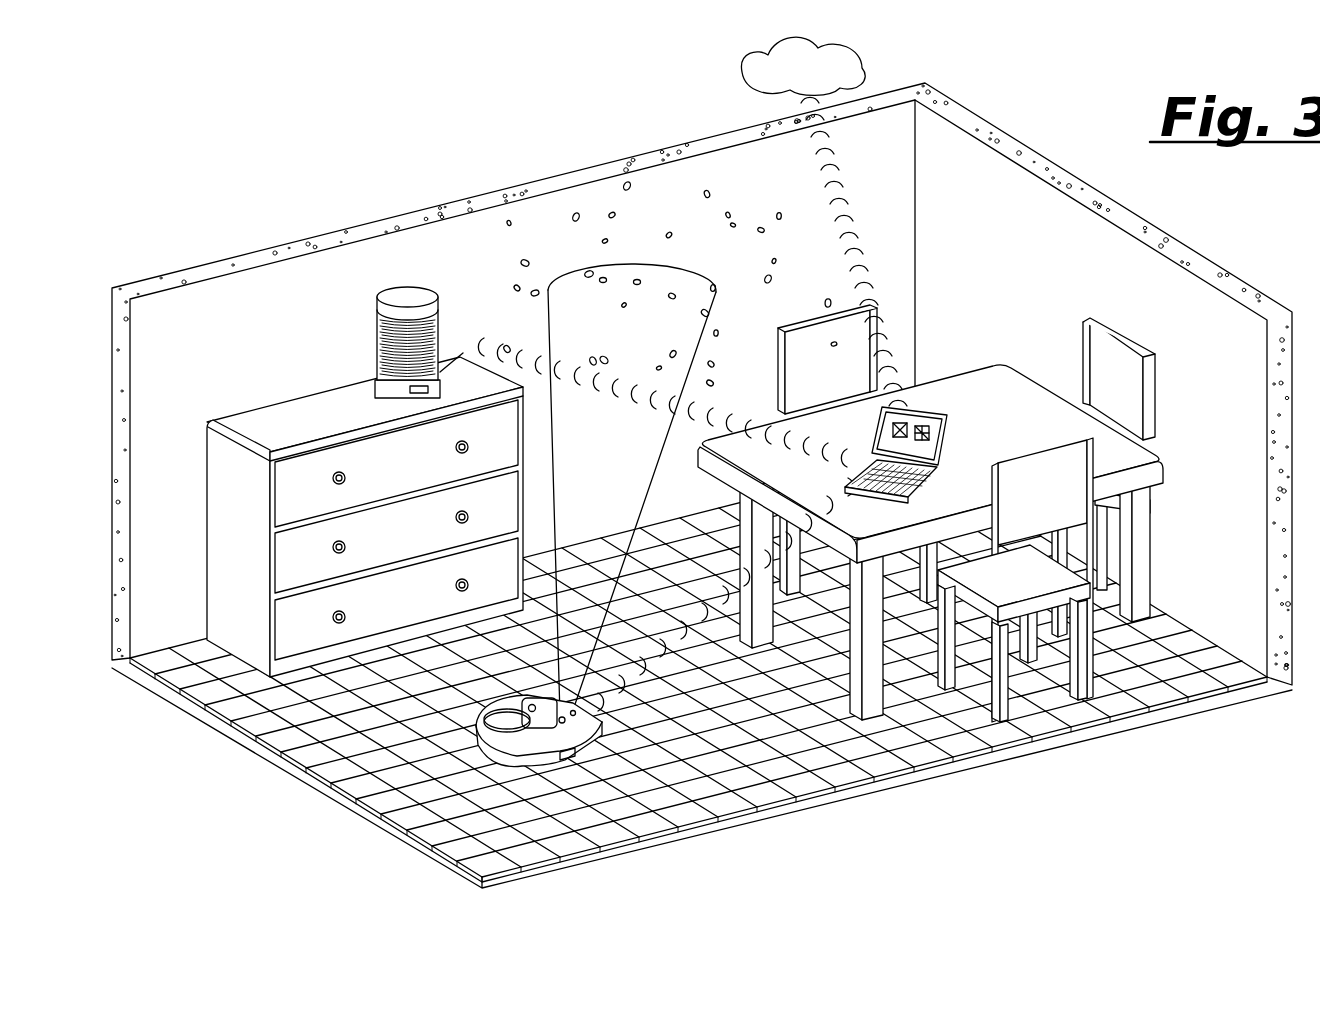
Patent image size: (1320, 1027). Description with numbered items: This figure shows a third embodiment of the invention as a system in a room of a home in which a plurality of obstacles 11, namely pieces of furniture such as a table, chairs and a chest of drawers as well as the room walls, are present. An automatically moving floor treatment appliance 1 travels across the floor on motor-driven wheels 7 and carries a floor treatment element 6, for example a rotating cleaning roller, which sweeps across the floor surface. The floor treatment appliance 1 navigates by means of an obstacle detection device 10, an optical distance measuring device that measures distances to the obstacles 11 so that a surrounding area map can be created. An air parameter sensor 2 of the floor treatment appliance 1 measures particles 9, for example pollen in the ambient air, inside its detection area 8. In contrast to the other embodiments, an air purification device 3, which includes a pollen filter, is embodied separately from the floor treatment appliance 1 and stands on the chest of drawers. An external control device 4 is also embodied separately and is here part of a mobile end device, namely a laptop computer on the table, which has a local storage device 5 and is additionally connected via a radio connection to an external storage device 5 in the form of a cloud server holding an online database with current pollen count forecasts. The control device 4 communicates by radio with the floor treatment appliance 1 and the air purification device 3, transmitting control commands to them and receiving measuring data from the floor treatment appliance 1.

The floor treatment appliance 1 is at (566, 812).
The air parameter sensor 2 is at (673, 801).
The air purification device 3 is at (419, 267).
The control device 4 is at (914, 627).
The storage device 5 is at (772, 66).
The floor treatment element 6 is at (637, 810).
The motor-driven wheels 7 is at (588, 839).
The detection area 8 is at (632, 490).
The particles 9 is at (670, 242).
The obstacle detection device 10 is at (443, 810).
The obstacles 11 is at (702, 402).